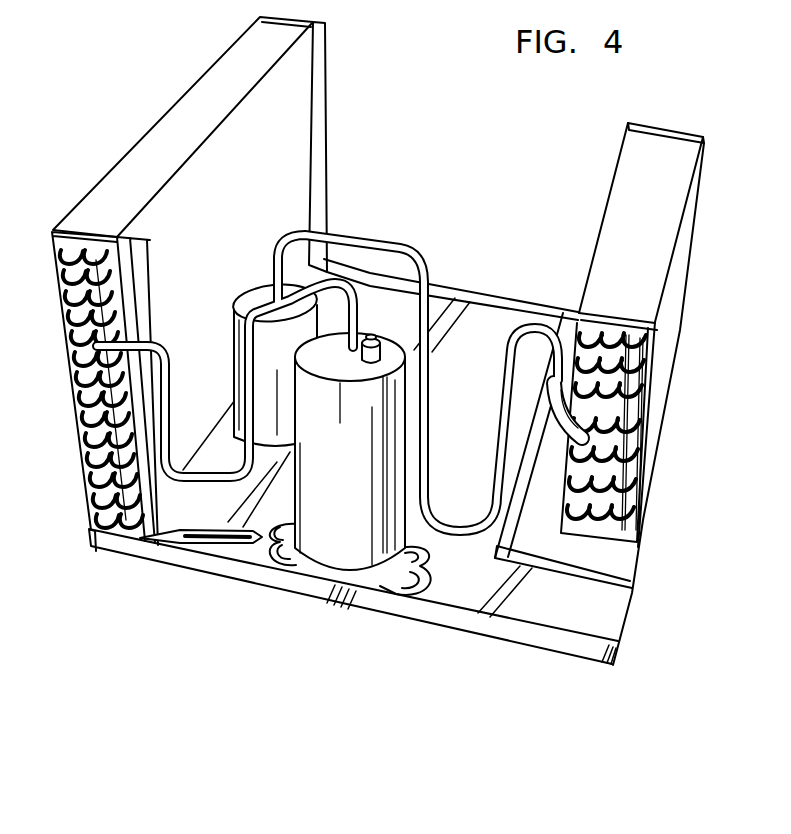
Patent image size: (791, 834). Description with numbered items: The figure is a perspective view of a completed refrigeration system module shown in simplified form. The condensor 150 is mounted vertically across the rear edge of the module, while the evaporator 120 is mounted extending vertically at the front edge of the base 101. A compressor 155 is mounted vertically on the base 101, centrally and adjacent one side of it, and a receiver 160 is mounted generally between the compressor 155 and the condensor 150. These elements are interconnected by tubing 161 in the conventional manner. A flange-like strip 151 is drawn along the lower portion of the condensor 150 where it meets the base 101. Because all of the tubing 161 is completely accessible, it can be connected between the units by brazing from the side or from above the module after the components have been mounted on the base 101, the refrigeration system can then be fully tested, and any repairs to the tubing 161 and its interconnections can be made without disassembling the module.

The base 101 is at (256, 574).
The evaporator 120 is at (173, 130).
The condensor 150 is at (651, 395).
The mounting flange 151 is at (620, 583).
The compressor 155 is at (344, 562).
The receiver 160 is at (262, 292).
The tubing 161 is at (238, 484).